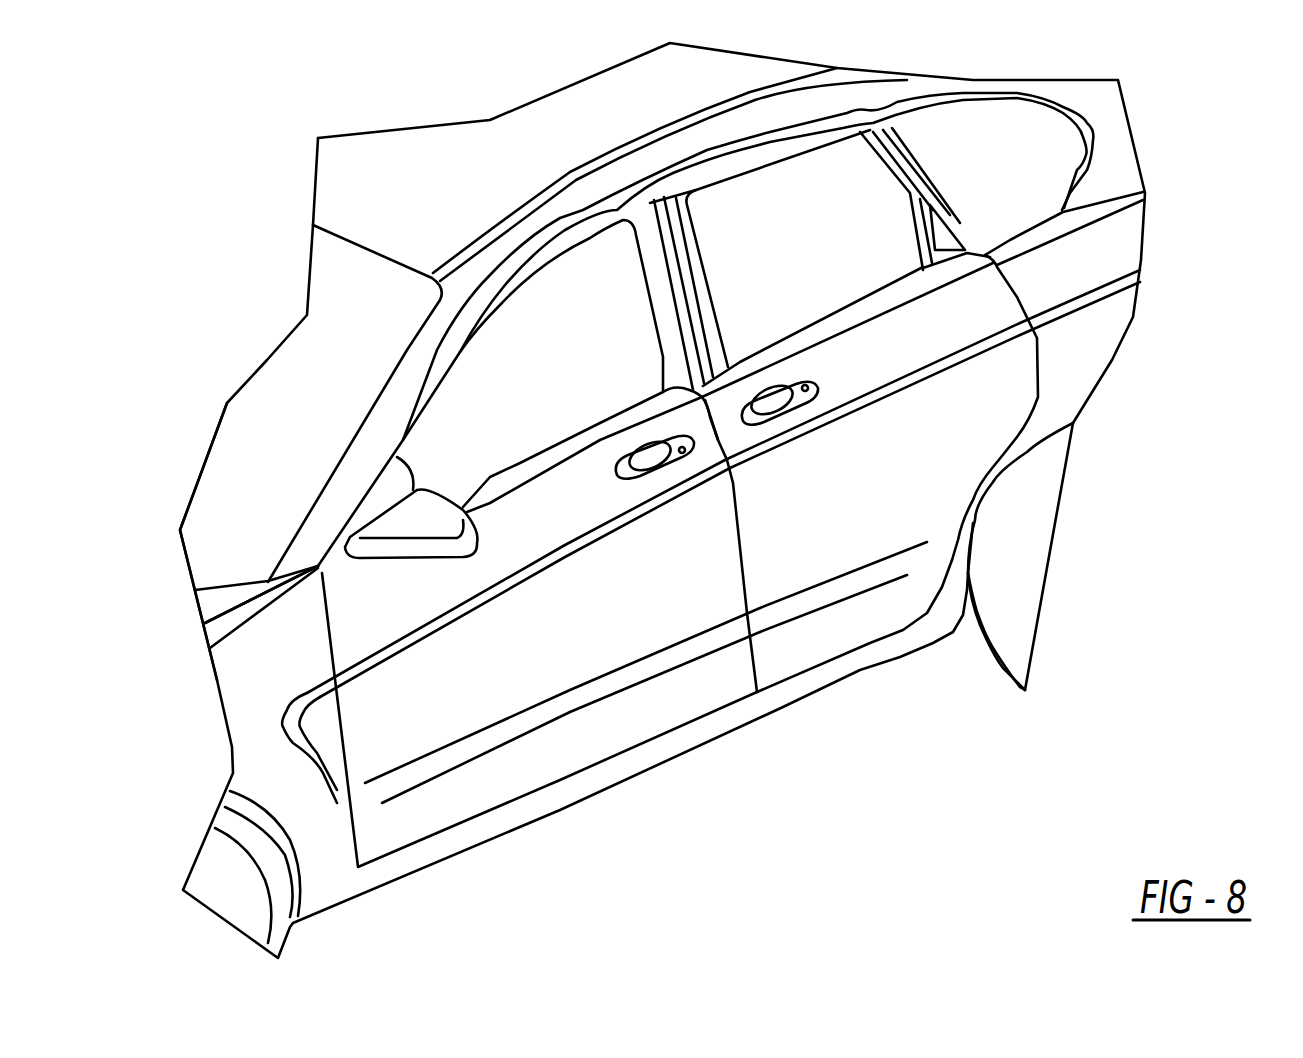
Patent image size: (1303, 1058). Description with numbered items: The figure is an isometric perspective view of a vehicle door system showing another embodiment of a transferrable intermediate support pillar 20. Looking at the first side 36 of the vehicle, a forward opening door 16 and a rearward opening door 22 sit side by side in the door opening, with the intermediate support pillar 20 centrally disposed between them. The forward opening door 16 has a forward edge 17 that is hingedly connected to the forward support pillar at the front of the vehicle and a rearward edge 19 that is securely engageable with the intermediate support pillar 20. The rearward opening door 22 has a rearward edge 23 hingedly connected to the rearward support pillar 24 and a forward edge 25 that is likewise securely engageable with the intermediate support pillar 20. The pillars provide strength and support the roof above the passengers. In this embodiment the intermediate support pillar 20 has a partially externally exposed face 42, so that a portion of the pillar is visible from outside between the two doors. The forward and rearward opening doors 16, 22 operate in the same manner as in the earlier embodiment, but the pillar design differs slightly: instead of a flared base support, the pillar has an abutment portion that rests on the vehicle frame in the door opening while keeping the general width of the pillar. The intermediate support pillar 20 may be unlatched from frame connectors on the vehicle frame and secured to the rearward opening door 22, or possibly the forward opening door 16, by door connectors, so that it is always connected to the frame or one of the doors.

The forward opening door 16 is at (558, 647).
The forward edge 17 is at (317, 752).
The rearward edge 19 is at (728, 495).
The intermediate support pillar 20 is at (693, 333).
The rearward opening door 22 is at (925, 482).
The rearward edge 23 is at (1013, 310).
The rearward support pillar 24 is at (1057, 403).
The forward edge 25 is at (733, 560).
The first side 36 is at (285, 679).
The partially externally exposed face 42 is at (670, 252).